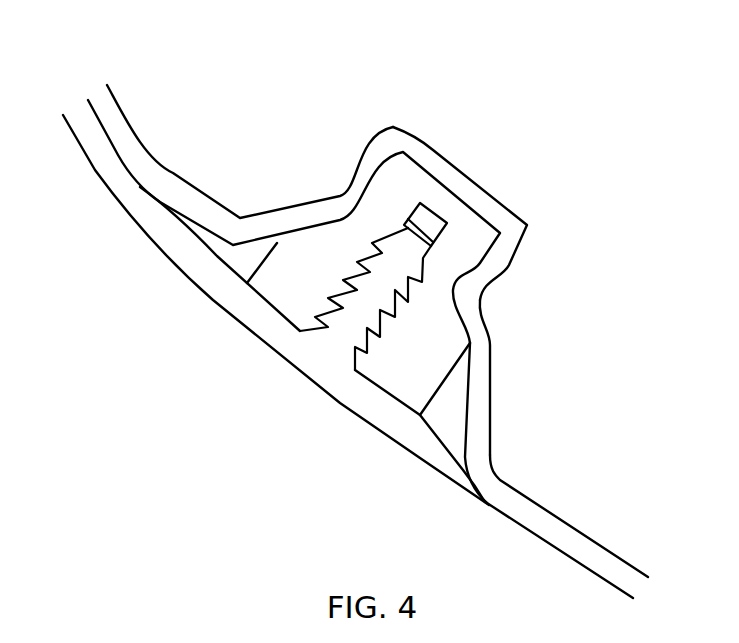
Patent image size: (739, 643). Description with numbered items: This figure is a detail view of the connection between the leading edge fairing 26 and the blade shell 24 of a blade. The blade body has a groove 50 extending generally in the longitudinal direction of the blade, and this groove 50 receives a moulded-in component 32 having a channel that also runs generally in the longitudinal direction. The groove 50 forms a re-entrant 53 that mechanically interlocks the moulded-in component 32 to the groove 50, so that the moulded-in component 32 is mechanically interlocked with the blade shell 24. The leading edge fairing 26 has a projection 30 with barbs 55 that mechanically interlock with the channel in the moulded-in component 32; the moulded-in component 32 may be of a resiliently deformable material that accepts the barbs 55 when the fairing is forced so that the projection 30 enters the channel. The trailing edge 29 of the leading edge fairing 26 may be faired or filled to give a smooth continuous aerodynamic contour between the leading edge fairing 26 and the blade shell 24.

The blade shell 24 is at (583, 548).
The leading edge fairing 26 is at (263, 320).
The trailing edge 29 is at (427, 490).
The projection 30 is at (392, 275).
The moulded-in component 32 is at (447, 328).
The groove 50 is at (341, 294).
The re-entrant 53 is at (510, 233).
The barbs 55 is at (353, 272).